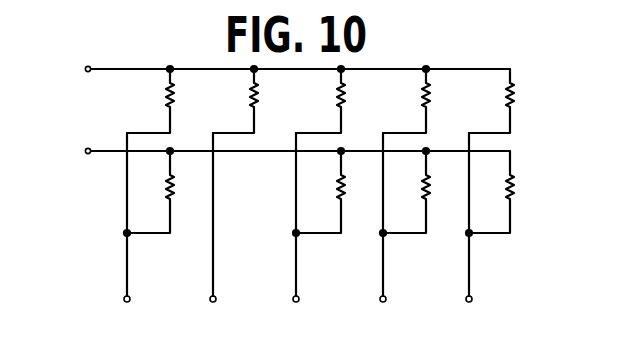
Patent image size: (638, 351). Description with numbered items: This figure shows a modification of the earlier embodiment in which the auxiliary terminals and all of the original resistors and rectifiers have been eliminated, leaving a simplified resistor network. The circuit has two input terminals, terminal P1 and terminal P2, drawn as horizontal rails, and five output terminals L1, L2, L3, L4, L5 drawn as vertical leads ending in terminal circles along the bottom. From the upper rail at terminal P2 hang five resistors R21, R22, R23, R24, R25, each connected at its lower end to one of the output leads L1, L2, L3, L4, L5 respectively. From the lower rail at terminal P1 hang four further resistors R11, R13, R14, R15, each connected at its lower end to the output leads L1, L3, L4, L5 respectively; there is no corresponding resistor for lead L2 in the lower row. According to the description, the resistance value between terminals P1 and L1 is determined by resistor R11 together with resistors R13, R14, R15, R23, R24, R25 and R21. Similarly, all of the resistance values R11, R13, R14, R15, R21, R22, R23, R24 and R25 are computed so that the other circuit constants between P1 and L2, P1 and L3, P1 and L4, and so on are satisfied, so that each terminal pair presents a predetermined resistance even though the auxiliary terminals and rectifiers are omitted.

The terminal P1 is at (280, 151).
The terminal P2 is at (280, 69).
The resistor R'11 R11 is at (168, 192).
The resistor R'13 R13 is at (339, 192).
The resistor R'14 R14 is at (425, 192).
The resistor R'15 R15 is at (510, 192).
The resistor R'21 R21 is at (169, 101).
The resistor R'22 R22 is at (255, 101).
The resistor R'23 R23 is at (340, 101).
The resistor R'24 R24 is at (426, 101).
The resistor R'25 R25 is at (511, 101).
The terminal L1 is at (127, 232).
The terminal L2 is at (213, 232).
The terminal L3 is at (296, 232).
The terminal L4 is at (383, 232).
The terminal L5 is at (469, 232).